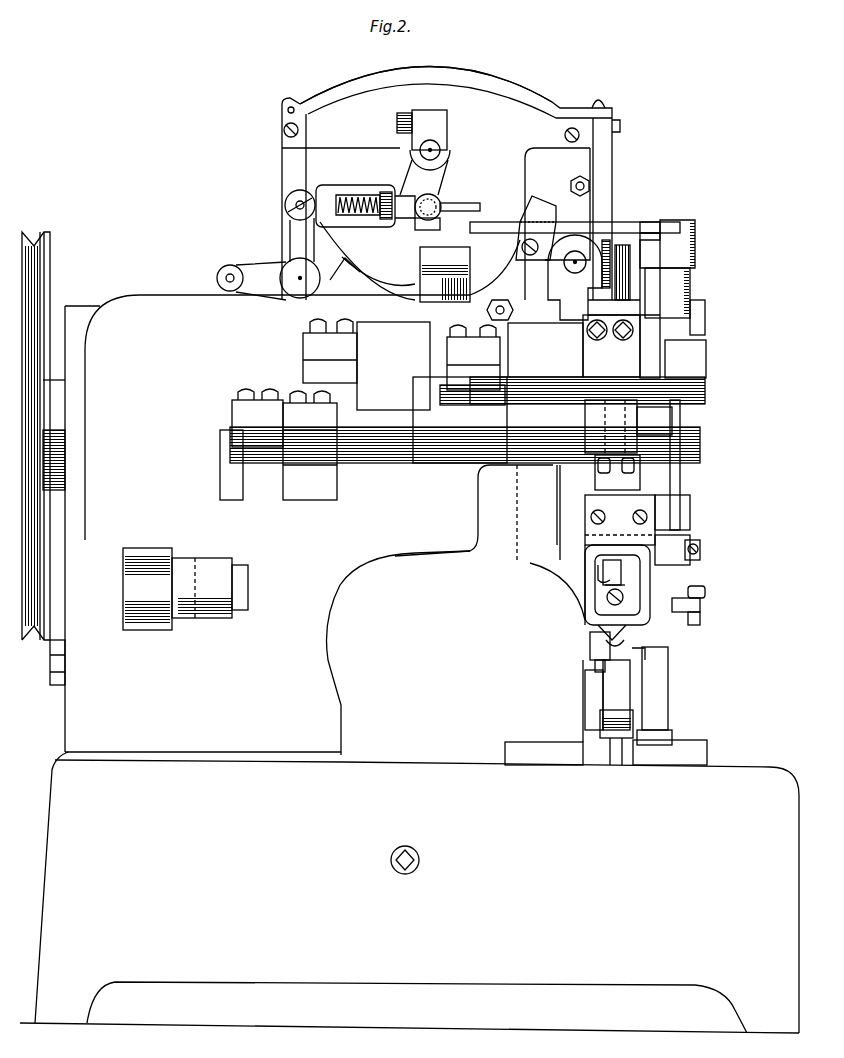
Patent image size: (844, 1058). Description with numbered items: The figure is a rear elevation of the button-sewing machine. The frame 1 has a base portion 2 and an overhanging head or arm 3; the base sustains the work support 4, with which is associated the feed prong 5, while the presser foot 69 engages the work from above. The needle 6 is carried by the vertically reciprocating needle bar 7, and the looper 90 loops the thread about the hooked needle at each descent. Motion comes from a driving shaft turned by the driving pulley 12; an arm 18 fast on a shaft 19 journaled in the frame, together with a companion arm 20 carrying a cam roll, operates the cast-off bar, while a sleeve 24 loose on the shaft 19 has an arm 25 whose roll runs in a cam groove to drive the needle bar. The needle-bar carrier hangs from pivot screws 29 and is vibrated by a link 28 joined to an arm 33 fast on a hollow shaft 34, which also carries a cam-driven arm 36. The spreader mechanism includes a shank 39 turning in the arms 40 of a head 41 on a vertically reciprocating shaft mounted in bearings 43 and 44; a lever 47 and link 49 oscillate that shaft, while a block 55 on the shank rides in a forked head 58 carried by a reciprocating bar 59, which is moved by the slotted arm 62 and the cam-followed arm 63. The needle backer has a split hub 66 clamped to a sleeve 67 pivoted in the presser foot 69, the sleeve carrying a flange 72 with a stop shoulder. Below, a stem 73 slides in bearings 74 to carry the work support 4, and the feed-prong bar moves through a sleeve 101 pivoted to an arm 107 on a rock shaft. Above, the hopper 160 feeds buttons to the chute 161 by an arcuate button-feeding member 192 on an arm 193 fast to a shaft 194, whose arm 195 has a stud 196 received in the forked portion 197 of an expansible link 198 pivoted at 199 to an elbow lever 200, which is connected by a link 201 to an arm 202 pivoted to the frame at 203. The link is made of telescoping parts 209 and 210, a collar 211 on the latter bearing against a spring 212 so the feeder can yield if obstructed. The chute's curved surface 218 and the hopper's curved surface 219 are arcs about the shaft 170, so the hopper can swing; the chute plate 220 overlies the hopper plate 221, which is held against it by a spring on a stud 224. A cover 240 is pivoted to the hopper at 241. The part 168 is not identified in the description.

The frame 1 is at (75, 700).
The base portion 2 is at (438, 777).
The overhanging head or arm 3 is at (420, 551).
The work support 4 is at (626, 645).
The feed prong 5 is at (592, 658).
The needle 6 is at (620, 520).
The needle bar 7 is at (630, 290).
The driving pulley 12 is at (50, 247).
The arm 18 is at (590, 415).
The shaft 19 is at (662, 420).
The arm 20 is at (235, 468).
The sleeve 24 is at (470, 450).
The arm 25 is at (333, 478).
The link 28 is at (630, 484).
The pivot screw 29 is at (700, 333).
The arm 33 is at (595, 352).
The hollow shaft 34 is at (435, 355).
The arm 36 is at (452, 343).
The shank 39 is at (705, 592).
The arms 40 is at (700, 602).
The head or block 41 is at (700, 546).
The bearing 43 is at (690, 500).
The bearing 44 is at (692, 295).
The lever 47 is at (695, 258).
The link 49 is at (636, 225).
The block 55 is at (690, 618).
The forked head 58 is at (688, 536).
The reciprocating bar 59 is at (680, 470).
The arm 62 is at (706, 357).
The arm 63 is at (303, 345).
The split hub 66 is at (605, 588).
The sleeve 67 is at (613, 600).
The presser foot 69 is at (585, 618).
The flange 72 is at (596, 568).
The stem 73 is at (595, 667).
The bearings 74 is at (590, 690).
The looper 90 is at (648, 648).
The sleeve 101 is at (610, 698).
The arm 107 is at (617, 766).
The hopper 160 is at (470, 95).
The chute 161 is at (555, 585).
The pivot stud 168 is at (500, 306).
The shaft 170 is at (612, 233).
The button-feeding member 192 is at (385, 276).
The arm 193 is at (410, 150).
The shaft 194 is at (432, 150).
The arm 195 is at (449, 172).
The stud 196 is at (440, 203).
The forked portion 197 is at (418, 222).
The link 198 is at (470, 203).
The pivot 199 is at (292, 200).
The elbow lever 200 is at (273, 265).
The link 201 is at (222, 284).
The arm 202 is at (213, 612).
The pivot 203 is at (248, 605).
The link part 209 is at (330, 186).
The link part 210 is at (408, 195).
The collar 211 is at (380, 196).
The spring 212 is at (350, 196).
The curved surface 218 is at (586, 230).
The curved surface 219 is at (578, 190).
The plate 220 is at (537, 222).
The plate 221 is at (557, 155).
The stud 224 is at (592, 189).
The cover 240 is at (445, 58).
The pivot 241 is at (291, 105).